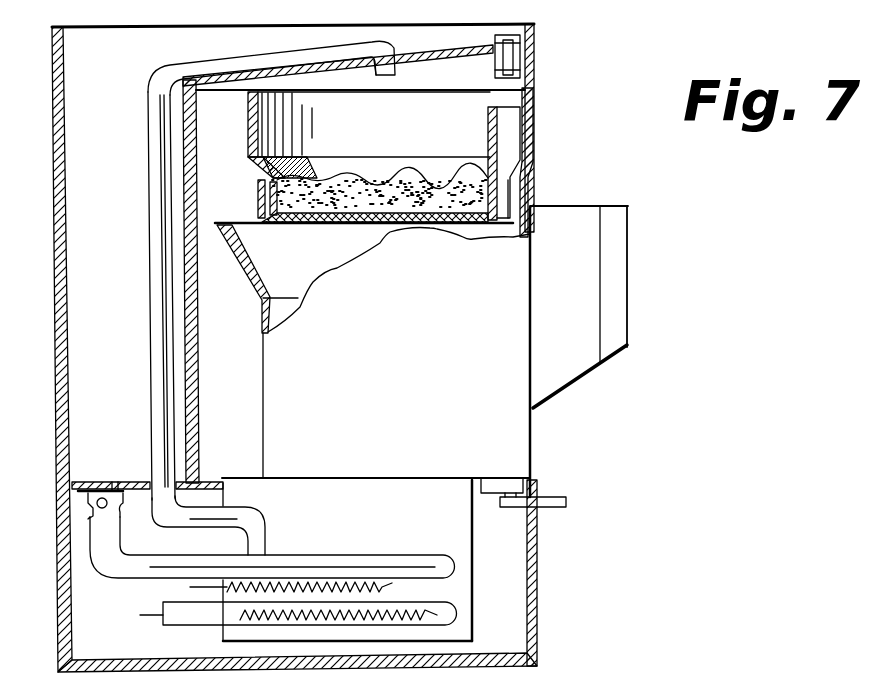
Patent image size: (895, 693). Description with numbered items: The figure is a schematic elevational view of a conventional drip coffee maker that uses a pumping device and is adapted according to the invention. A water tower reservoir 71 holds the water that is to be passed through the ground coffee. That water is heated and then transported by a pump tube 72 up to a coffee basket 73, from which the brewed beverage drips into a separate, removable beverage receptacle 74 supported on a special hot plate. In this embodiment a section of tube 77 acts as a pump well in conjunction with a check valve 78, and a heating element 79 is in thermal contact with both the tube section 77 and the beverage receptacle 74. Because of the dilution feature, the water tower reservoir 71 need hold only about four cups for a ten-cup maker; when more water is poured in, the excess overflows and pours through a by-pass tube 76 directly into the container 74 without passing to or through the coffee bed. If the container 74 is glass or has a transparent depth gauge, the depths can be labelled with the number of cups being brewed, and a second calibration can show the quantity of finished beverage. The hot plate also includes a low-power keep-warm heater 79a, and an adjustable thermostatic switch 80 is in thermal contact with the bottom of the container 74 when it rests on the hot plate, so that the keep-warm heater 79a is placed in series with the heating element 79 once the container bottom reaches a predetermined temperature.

The water tower reservoir 71 is at (58, 322).
The pump tube 72 is at (195, 62).
The coffee basket 73 is at (285, 127).
The beverage receptacle 74 is at (518, 438).
The by-pass tube 76 is at (490, 135).
The tube section 77 is at (337, 560).
The check valve 78 is at (118, 506).
The heating element 79 is at (457, 620).
The keep-warm heater 79a is at (392, 583).
The adjustable thermostatic switch 80 is at (533, 483).